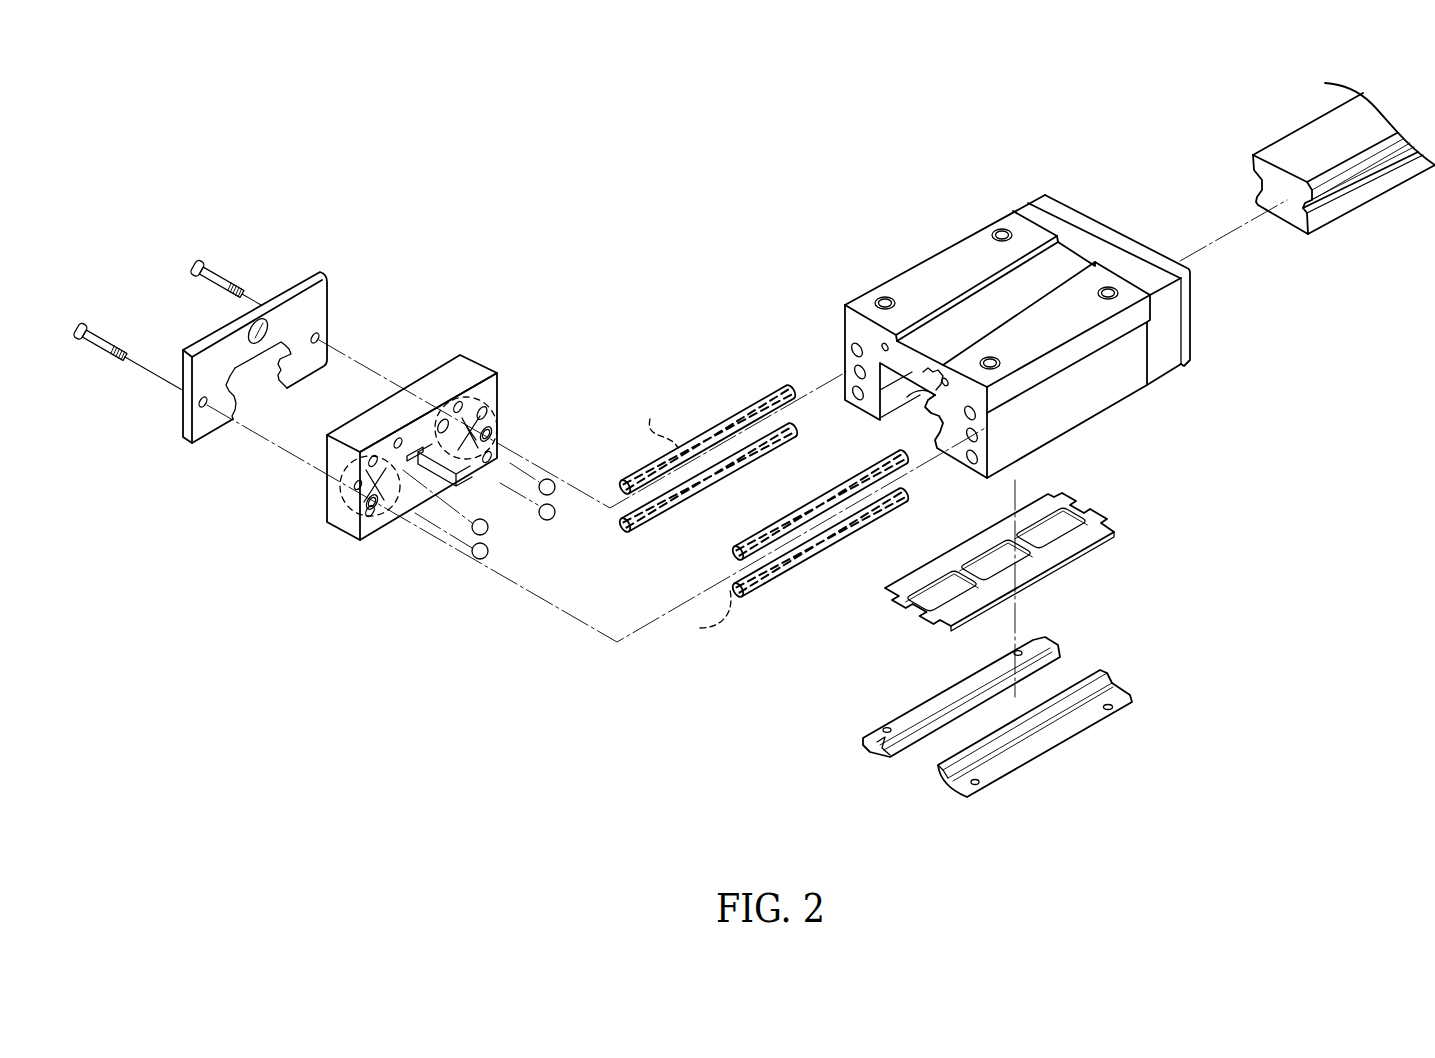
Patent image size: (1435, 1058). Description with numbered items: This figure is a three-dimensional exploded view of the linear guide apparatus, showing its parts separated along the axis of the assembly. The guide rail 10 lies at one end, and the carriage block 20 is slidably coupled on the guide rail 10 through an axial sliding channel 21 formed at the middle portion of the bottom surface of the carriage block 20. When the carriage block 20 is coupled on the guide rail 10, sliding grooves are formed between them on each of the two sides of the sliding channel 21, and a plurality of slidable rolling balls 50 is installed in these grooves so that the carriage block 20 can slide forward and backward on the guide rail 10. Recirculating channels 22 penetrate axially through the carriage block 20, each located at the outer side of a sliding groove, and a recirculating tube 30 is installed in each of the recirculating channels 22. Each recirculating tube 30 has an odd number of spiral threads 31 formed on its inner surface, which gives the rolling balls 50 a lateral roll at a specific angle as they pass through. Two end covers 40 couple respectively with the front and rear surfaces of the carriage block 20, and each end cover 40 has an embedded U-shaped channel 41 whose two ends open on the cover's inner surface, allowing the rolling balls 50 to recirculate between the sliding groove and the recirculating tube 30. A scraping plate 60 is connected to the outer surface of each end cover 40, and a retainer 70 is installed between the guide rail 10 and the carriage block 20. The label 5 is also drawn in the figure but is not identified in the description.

The guide rail 10 is at (1358, 208).
The carriage block 20 is at (1107, 418).
The sliding channel 21 is at (928, 368).
The recirculating channels 22 is at (855, 347).
The recirculating tubes 30 is at (731, 408).
The spiral threads 31 is at (683, 518).
The end covers 40 is at (417, 375).
The U-shaped channel 41 is at (483, 398).
The rolling balls 50 is at (548, 477).
The scraping plate 60 is at (183, 405).
The retainer 70 is at (1050, 577).
The rolling passage 5 is at (907, 397).